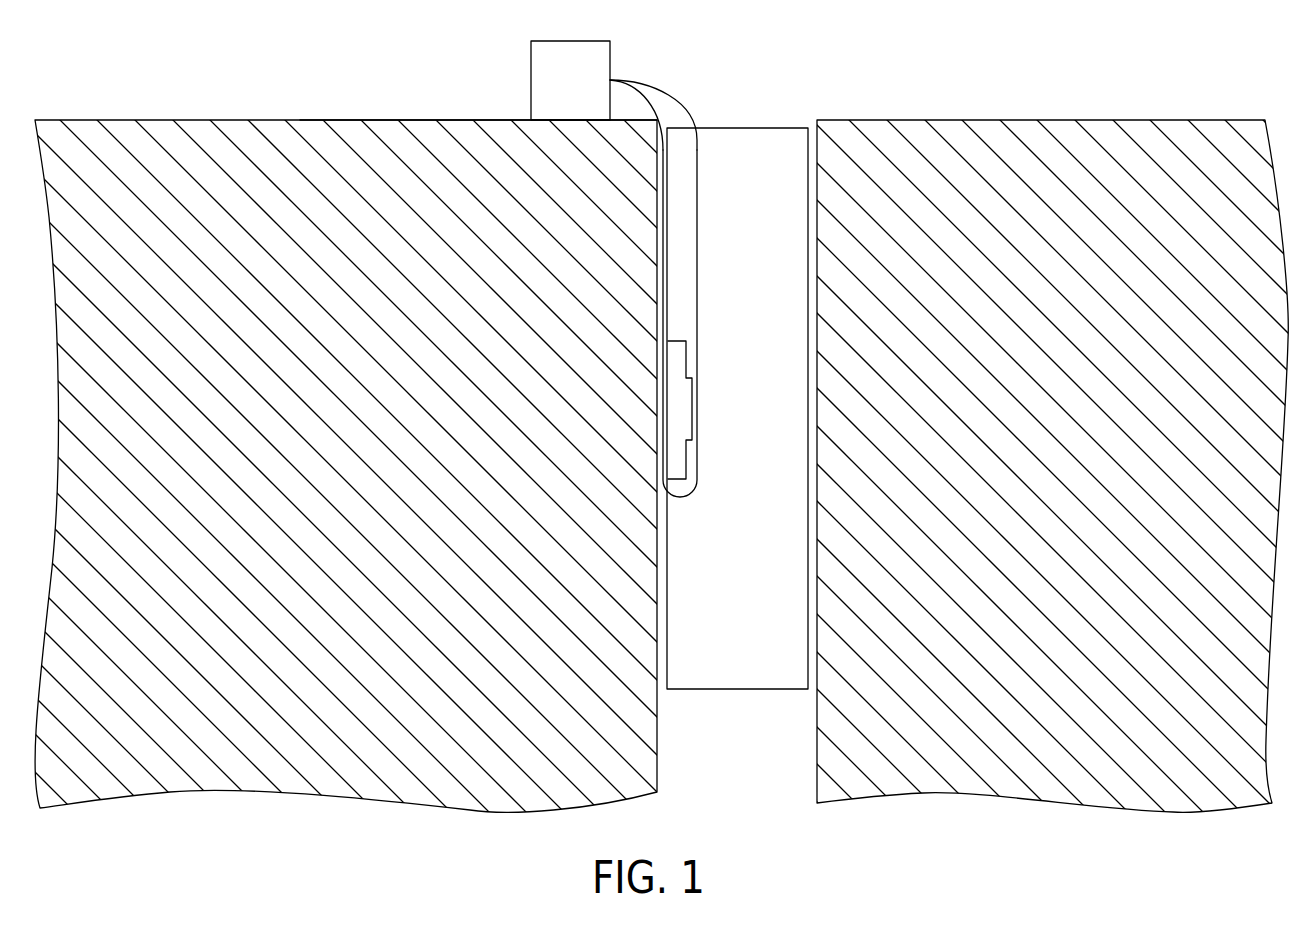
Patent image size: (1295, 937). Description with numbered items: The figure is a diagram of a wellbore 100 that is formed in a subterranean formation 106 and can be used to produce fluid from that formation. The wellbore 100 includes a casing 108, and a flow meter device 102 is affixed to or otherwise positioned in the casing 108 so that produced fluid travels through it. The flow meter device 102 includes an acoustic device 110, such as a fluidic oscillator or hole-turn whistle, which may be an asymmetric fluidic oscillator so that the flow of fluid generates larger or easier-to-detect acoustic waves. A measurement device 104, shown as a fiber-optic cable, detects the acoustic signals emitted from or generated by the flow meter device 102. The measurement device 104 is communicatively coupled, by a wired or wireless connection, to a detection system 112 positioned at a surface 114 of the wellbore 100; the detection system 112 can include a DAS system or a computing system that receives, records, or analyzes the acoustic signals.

The wellbore 100 is at (817, 288).
The flow meter device 102 is at (676, 470).
The measurement device 104 is at (670, 100).
The subterranean formation 106 is at (348, 308).
The casing 108 is at (808, 180).
The acoustic device 110 is at (670, 409).
The detection system 112 is at (603, 49).
The surface 114 is at (418, 129).